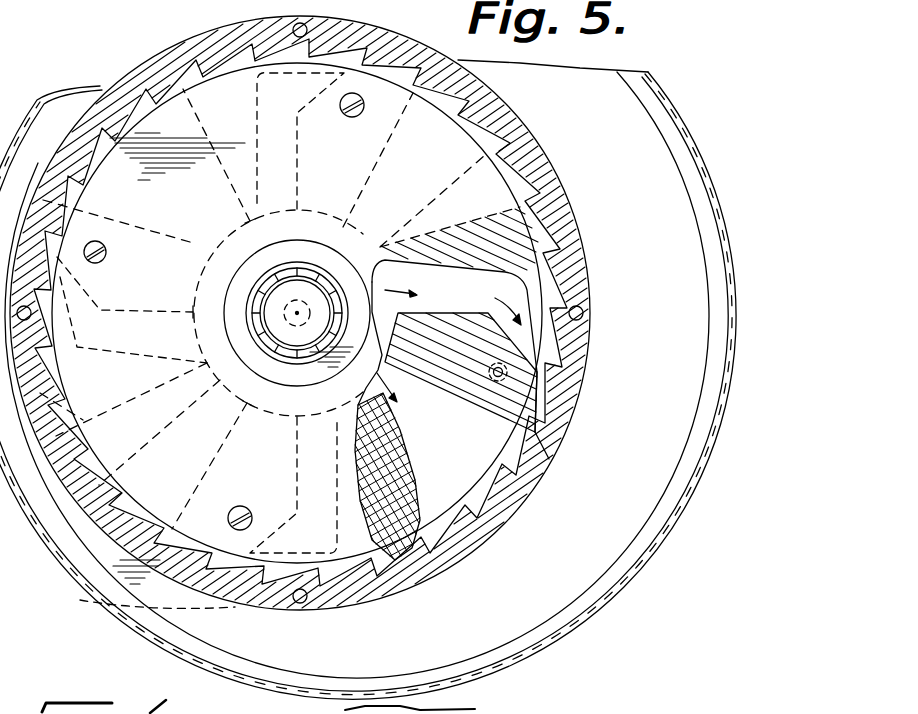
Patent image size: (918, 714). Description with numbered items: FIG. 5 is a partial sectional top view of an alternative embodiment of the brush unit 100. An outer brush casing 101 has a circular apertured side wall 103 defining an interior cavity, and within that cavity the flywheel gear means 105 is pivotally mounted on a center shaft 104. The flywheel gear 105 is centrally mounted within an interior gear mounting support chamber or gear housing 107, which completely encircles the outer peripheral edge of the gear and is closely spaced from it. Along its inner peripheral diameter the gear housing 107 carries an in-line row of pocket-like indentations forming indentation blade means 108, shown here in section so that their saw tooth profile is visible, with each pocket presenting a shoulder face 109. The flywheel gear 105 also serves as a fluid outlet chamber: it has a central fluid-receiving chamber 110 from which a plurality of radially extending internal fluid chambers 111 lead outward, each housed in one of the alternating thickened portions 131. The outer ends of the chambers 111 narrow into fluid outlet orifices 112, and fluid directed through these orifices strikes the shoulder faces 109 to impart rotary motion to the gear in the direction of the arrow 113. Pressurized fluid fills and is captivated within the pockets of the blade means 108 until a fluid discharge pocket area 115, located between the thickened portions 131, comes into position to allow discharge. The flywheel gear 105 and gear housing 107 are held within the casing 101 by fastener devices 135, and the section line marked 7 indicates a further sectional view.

The brush unit 100 is at (703, 98).
The outer brush casing 101 is at (733, 302).
The circular apertured side wall 103 is at (722, 398).
The center shaft 104 is at (296, 288).
The flywheel gear means 105 is at (182, 247).
The gear housing 107 is at (466, 546).
The indentation blade means 108 is at (568, 392).
The shoulder faces 109 is at (483, 492).
The central fluid-receiving chamber 110 is at (300, 250).
The internal fluid chambers 111 is at (292, 141).
The fluid outlet orifices 112 is at (566, 352).
The arrow 113 is at (410, 630).
The fluid discharge pocket area 115 is at (507, 108).
The thickened portions 131 is at (270, 437).
The fastener devices 135 is at (93, 237).
The section line 7 is at (77, 236).